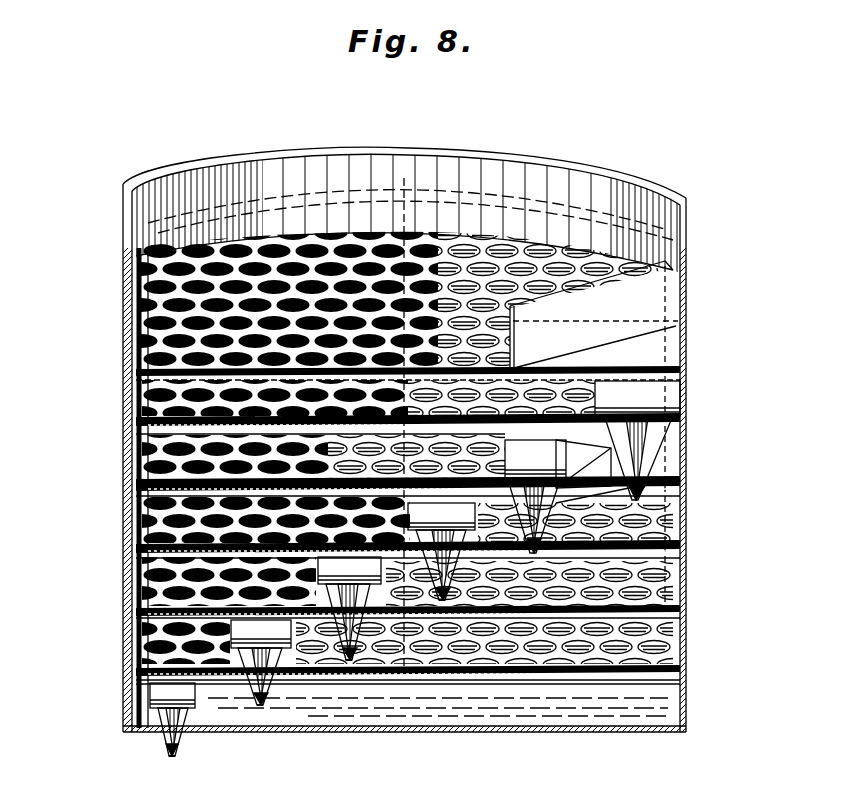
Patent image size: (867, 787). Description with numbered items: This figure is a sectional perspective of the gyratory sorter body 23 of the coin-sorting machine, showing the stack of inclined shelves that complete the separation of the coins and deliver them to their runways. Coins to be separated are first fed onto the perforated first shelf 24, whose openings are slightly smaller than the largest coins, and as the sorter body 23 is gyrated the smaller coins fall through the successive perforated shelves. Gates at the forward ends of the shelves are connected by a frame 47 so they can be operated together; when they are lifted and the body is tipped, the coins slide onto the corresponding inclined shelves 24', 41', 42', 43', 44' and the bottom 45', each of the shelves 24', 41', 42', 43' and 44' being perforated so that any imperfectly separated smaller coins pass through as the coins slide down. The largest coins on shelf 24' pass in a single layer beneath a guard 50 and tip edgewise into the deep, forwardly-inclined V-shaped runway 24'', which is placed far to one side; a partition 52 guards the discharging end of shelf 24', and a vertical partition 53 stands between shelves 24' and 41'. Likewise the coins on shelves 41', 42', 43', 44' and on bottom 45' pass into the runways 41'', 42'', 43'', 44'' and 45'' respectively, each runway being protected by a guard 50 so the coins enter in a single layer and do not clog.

The gyratory sorter body 23 is at (680, 192).
The frame 47 is at (560, 200).
The first shelf 24 is at (369, 304).
The partition 52 is at (648, 300).
The inclined shelf 24' is at (369, 403).
The V-shaped runway 24'' is at (655, 455).
The inclined shelf 41' is at (405, 462).
The runway 41'' is at (654, 523).
The inclined shelf 42' is at (369, 524).
The runway 42'' is at (491, 684).
The inclined shelf 43' is at (369, 586).
The runway 43'' is at (378, 708).
The inclined shelf 44' is at (369, 647).
The runway 44'' is at (284, 732).
The bottom 45' is at (408, 724).
The runway 45'' is at (142, 761).
The guard 50 is at (630, 398).
The vertical partition 53 is at (497, 440).